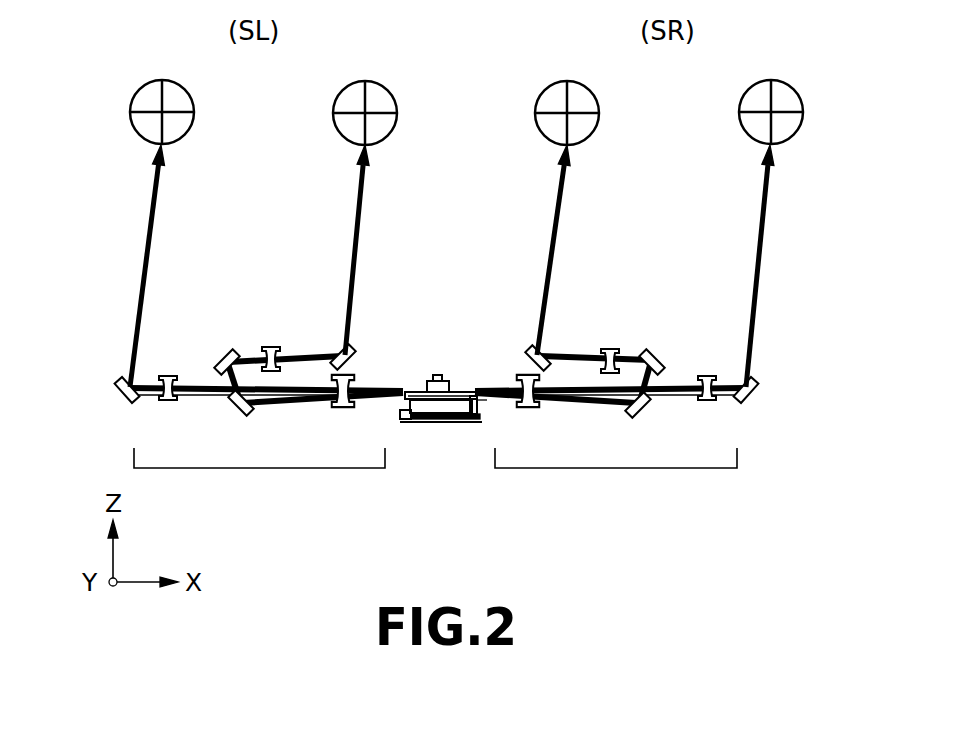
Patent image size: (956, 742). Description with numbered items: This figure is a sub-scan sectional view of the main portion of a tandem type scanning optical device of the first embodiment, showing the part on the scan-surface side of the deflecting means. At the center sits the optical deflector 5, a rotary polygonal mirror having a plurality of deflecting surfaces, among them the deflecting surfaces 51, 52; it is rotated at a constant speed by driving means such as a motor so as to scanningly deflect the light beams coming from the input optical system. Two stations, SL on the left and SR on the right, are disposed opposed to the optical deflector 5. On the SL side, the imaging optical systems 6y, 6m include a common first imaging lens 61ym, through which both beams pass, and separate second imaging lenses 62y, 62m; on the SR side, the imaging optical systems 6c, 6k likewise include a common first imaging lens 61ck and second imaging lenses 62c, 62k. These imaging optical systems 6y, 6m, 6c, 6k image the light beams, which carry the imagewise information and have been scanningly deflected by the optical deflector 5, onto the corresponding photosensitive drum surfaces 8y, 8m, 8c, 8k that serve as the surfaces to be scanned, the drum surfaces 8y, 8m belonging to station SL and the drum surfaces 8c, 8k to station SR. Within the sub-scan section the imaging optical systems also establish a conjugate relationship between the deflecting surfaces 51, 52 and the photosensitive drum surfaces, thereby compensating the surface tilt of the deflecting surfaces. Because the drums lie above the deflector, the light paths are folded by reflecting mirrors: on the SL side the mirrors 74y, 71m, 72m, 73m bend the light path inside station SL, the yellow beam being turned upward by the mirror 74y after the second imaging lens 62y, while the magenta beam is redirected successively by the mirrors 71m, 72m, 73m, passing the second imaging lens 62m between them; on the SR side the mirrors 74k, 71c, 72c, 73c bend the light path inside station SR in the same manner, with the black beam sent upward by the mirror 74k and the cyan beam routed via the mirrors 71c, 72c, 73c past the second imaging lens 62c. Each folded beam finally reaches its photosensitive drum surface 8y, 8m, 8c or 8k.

The optical deflector 5 is at (440, 408).
The deflecting surface 51 is at (470, 393).
The deflecting surface 52 is at (413, 393).
The imaging optical system 6y is at (259, 475).
The imaging optical system 6m is at (259, 475).
The imaging optical system 6c is at (616, 475).
The imaging optical system 6k is at (616, 475).
The first imaging lens 61ym is at (343, 410).
The first imaging lens 61ck is at (526, 410).
The second imaging lens 62y is at (168, 400).
The second imaging lens 62m is at (273, 347).
The second imaging lens 62c is at (608, 349).
The second imaging lens 62k is at (703, 402).
The mirror 71m is at (243, 410).
The mirror 71c is at (634, 412).
The mirror 72m is at (226, 348).
The mirror 72c is at (656, 349).
The mirror 73m is at (351, 348).
The mirror 73c is at (529, 356).
The mirror 74y is at (120, 398).
The mirror 74k is at (746, 398).
The photosensitive drum surface 8y is at (178, 134).
The photosensitive drum surface 8m is at (380, 134).
The photosensitive drum surface 8c is at (582, 134).
The photosensitive drum surface 8k is at (786, 134).